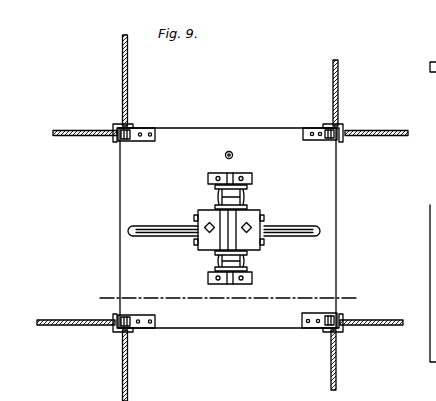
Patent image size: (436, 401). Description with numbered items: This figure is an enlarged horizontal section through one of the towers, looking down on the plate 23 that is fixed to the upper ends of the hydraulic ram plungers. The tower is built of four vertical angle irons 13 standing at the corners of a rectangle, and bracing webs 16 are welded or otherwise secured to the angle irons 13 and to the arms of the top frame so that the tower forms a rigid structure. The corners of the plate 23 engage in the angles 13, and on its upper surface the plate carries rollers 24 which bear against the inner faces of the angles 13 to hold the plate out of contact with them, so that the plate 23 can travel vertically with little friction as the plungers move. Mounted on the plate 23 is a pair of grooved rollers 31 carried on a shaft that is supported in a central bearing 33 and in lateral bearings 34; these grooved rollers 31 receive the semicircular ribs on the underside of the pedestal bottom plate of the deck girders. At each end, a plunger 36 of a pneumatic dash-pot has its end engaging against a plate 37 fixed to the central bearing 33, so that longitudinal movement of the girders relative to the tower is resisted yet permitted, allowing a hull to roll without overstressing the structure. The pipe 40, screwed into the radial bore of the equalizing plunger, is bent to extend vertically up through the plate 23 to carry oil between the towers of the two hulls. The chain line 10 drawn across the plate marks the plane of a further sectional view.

The centerline of assembly 10 is at (228, 299).
The angle irons 13 is at (130, 125).
The bracing webs 16 is at (78, 129).
The plate 23 is at (336, 266).
The rollers 24 is at (130, 142).
The grooved rollers 31 is at (249, 201).
The central bearing 33 is at (234, 222).
The lateral bearings 34 is at (245, 173).
The plunger 36 is at (186, 237).
The plate 37 is at (196, 218).
The pipe 40 is at (225, 154).